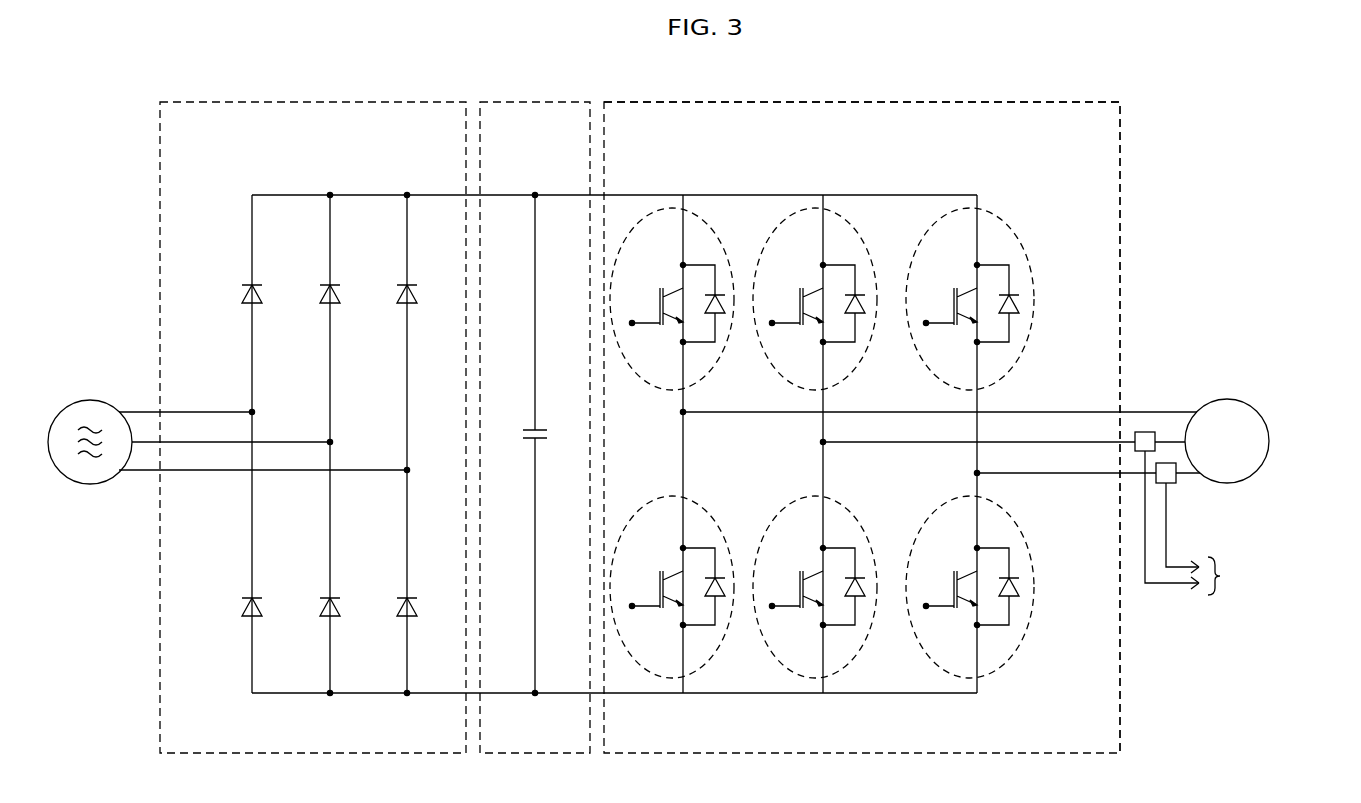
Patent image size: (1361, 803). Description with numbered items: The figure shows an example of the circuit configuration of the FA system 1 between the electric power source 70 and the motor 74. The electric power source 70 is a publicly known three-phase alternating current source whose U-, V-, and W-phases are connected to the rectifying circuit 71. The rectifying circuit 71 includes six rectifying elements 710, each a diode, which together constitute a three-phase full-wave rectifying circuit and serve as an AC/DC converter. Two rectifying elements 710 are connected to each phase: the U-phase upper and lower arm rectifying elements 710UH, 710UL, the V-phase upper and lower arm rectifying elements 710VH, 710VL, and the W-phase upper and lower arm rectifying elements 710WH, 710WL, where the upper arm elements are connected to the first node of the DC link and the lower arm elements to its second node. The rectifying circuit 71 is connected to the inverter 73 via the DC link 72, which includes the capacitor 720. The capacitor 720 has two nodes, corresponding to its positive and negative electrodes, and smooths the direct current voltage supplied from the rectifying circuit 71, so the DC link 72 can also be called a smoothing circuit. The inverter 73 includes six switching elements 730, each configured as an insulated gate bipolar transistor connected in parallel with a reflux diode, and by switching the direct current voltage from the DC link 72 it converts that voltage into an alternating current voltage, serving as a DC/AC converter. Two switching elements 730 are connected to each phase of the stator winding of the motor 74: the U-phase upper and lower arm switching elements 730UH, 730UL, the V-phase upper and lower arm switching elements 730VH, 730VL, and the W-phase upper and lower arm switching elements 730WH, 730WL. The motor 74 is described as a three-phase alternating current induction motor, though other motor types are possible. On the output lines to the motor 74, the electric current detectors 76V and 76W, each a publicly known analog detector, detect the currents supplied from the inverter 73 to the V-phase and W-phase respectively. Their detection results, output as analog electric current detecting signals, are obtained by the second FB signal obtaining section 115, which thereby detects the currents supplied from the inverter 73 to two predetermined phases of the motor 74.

The FA system 1 is at (1162, 138).
The electric power source 70 is at (90, 400).
The rectifying circuit 71 is at (320, 100).
The DC link 72 is at (530, 100).
The inverter 73 is at (785, 100).
The motor 74 is at (1227, 399).
The electric current detector 76V is at (1145, 432).
The electric current detector 76W is at (1166, 463).
The rectifying element 710 is at (605, 443).
The U-phase upper arm rectifying element 710UH is at (242, 293).
The V-phase upper arm rectifying element 710VH is at (320, 293).
The W-phase upper arm rectifying element 710WH is at (397, 293).
The U-phase lower arm rectifying element 710UL is at (242, 607).
The V-phase lower arm rectifying element 710VL is at (320, 607).
The W-phase lower arm rectifying element 710WL is at (397, 607).
The capacitor 720 is at (527, 430).
The switching element 730 is at (931, 444).
The U-phase upper arm switching element 730UH is at (722, 242).
The V-phase upper arm switching element 730VH is at (868, 242).
The W-phase upper arm switching element 730WH is at (1035, 289).
The U-phase lower arm switching element 730UL is at (716, 520).
The V-phase lower arm switching element 730VL is at (870, 540).
The W-phase lower arm switching element 730WL is at (1034, 576).
The second FB signal obtaining section 115 is at (1283, 606).